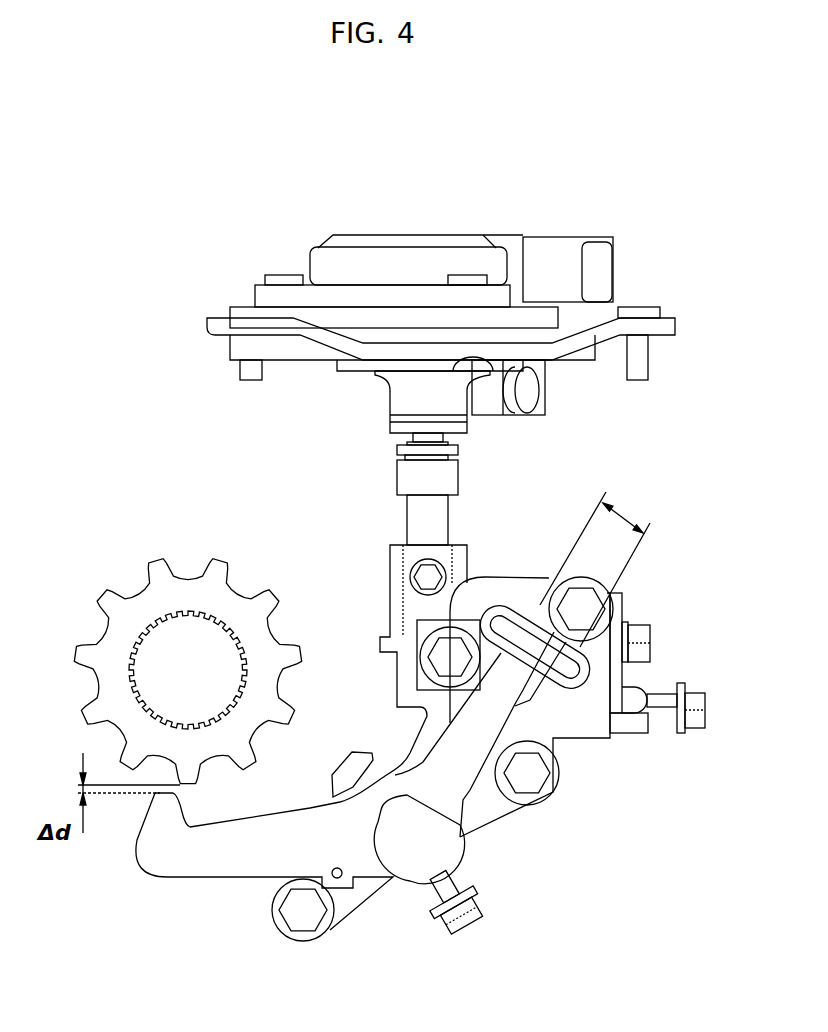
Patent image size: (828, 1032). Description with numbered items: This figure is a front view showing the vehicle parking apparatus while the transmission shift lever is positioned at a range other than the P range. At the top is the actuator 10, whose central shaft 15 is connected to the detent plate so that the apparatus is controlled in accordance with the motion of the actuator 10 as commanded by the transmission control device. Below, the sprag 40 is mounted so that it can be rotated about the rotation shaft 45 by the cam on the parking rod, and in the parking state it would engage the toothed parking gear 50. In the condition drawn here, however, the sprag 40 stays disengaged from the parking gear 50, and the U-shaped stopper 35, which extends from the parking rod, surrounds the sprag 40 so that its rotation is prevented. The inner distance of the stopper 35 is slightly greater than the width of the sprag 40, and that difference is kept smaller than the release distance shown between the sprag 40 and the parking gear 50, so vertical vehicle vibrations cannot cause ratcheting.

The actuator 10 is at (408, 262).
The central shaft 15 is at (405, 398).
The 'U'-shaped stopper 35 is at (577, 680).
The sprag 40 is at (465, 772).
The rotation shaft 45 is at (410, 867).
The parking gear 50 is at (145, 602).